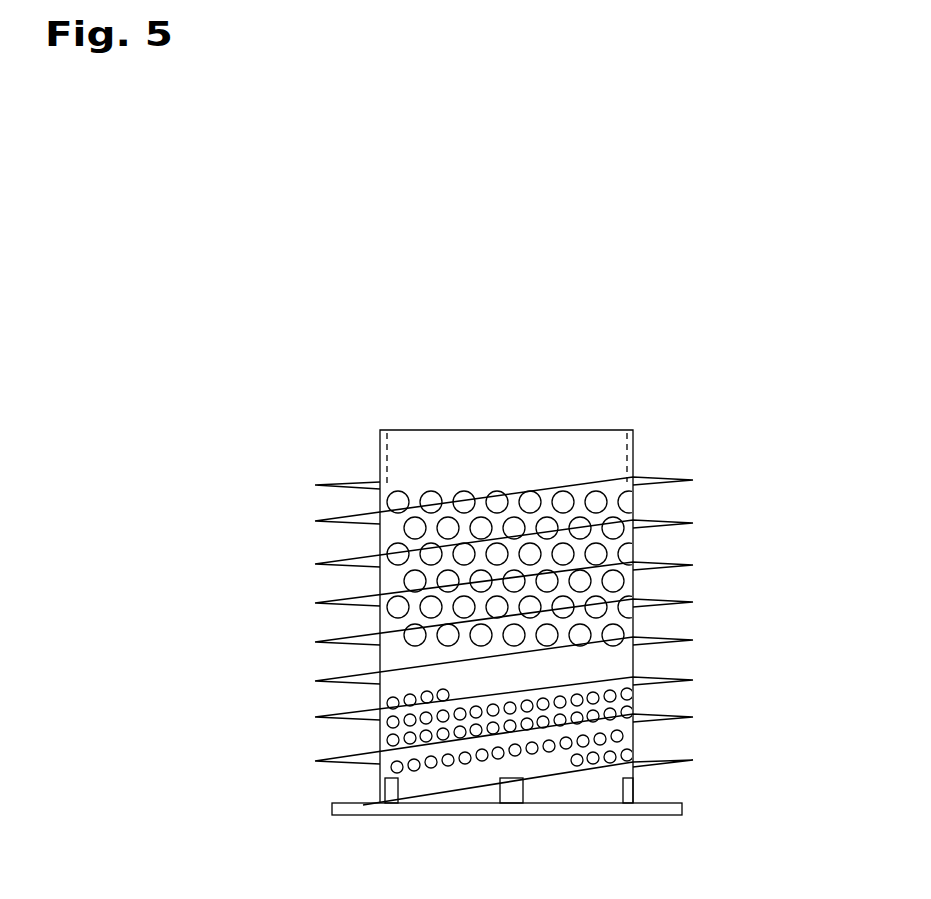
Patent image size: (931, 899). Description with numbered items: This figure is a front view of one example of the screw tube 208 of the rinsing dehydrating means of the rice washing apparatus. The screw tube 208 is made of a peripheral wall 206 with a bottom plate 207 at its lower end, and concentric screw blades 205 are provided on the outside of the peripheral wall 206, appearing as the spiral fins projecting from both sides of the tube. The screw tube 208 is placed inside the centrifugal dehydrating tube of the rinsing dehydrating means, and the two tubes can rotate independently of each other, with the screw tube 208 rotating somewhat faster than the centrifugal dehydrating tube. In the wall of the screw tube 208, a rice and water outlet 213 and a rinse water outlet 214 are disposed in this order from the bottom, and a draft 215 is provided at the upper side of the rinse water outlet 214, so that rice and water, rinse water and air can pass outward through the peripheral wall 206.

The screw blades 205 is at (672, 483).
The peripheral wall 206 is at (635, 443).
The bottom plate 207 is at (612, 816).
The screw tube 208 is at (369, 426).
The rice and water outlet 213 is at (383, 741).
The rinse water outlet 214 is at (383, 612).
The draft 215 is at (493, 503).